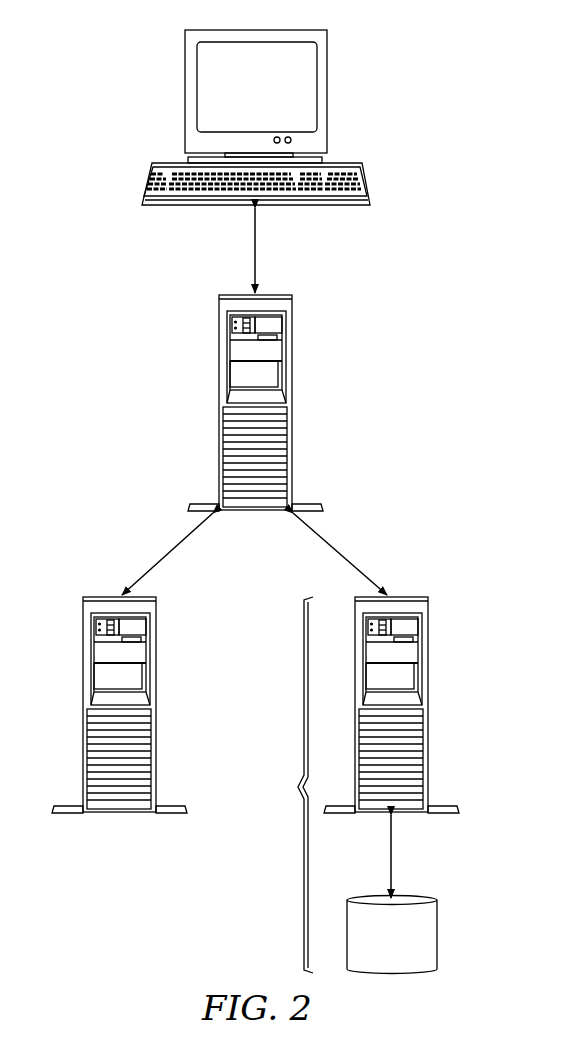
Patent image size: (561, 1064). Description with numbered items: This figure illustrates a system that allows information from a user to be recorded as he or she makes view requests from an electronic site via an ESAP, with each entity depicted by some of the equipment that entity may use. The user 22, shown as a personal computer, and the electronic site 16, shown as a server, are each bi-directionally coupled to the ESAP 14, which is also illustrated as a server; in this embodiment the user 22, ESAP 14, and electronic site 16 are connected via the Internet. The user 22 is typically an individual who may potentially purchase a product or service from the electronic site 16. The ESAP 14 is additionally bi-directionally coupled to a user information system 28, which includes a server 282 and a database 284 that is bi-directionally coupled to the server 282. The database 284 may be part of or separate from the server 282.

The user 22 is at (185, 90).
The ESAP 14 is at (292, 403).
The electronic site 16 is at (83, 705).
The user information system 28 is at (292, 785).
The server 282 is at (427, 705).
The database 284 is at (437, 935).